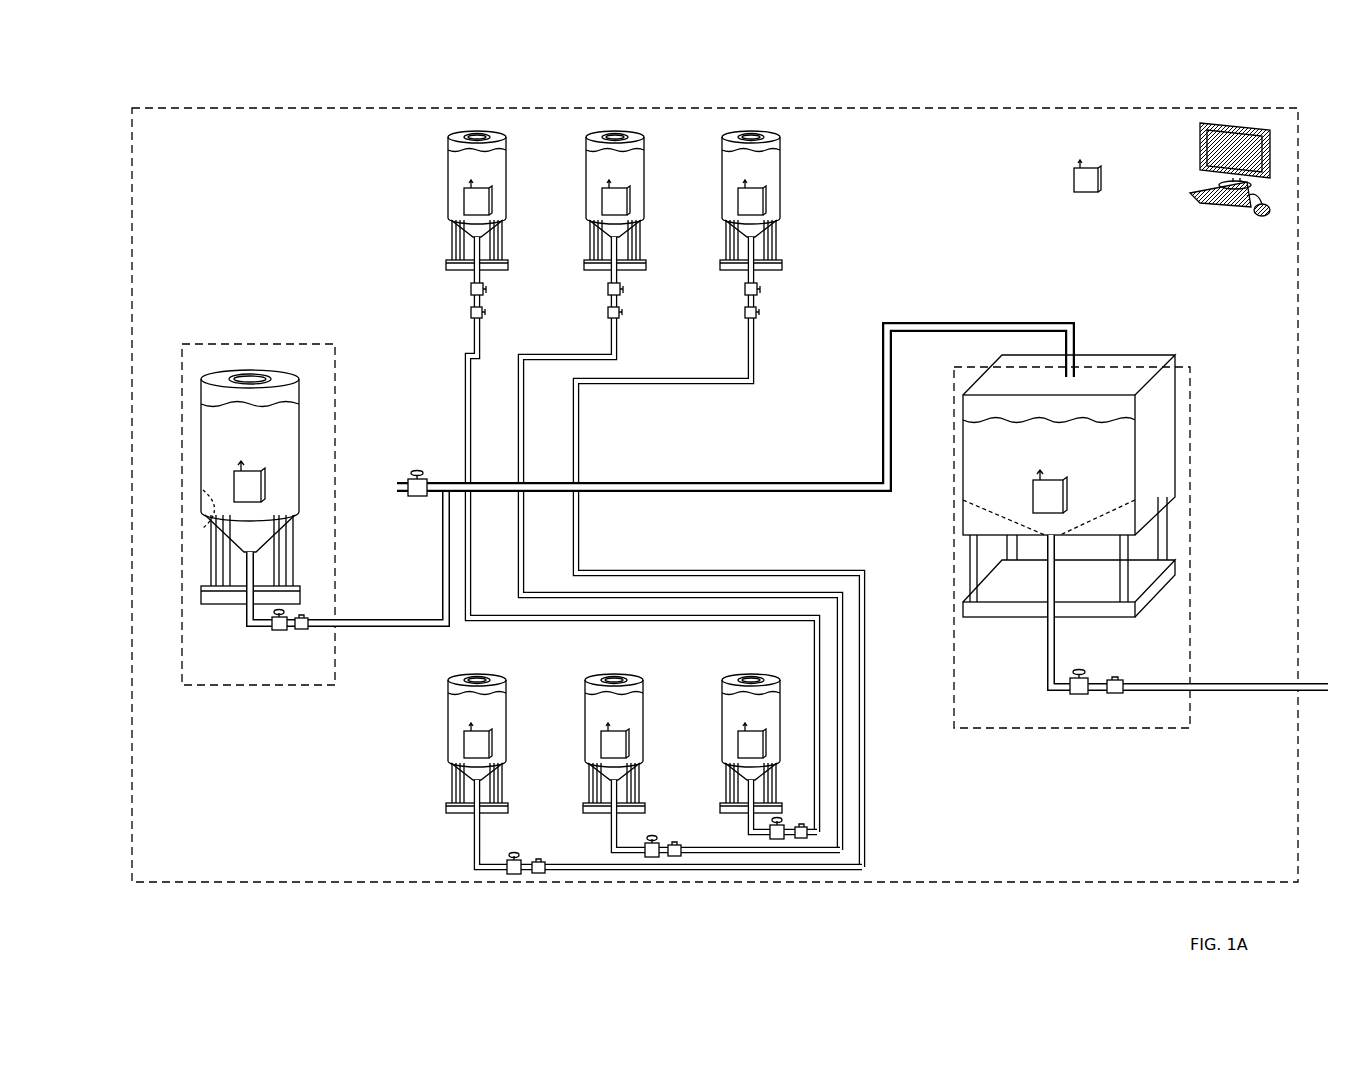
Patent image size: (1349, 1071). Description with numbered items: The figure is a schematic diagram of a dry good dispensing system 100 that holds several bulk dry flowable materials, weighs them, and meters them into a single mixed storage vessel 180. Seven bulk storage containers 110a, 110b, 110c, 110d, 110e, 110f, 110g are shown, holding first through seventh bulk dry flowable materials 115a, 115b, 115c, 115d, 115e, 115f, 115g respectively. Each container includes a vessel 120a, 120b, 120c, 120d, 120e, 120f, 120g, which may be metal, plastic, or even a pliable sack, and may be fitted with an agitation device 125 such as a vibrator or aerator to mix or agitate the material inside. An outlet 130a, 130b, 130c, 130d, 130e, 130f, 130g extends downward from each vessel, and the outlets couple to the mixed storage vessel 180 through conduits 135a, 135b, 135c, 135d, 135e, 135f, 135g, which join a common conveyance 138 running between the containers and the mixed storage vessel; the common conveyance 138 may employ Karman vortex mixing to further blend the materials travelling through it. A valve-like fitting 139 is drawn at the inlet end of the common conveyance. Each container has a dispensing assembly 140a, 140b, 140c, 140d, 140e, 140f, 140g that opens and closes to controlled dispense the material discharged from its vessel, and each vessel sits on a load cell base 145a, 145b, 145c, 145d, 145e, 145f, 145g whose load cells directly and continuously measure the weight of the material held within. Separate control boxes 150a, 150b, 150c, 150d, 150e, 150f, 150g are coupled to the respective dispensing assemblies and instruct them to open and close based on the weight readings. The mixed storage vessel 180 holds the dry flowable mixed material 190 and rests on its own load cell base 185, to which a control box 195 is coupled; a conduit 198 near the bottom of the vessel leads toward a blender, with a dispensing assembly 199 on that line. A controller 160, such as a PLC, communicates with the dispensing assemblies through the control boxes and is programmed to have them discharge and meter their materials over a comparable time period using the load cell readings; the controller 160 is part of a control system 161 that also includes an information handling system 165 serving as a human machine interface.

The dry good dispensing system 100 is at (176, 81).
The first bulk storage container 110a is at (204, 352).
The second bulk storage container 110b is at (421, 125).
The third bulk storage container 110c is at (421, 683).
The fourth bulk storage container 110d is at (561, 125).
The fifth bulk storage container 110e is at (561, 683).
The sixth bulk storage container 110f is at (694, 125).
The seventh bulk storage container 110g is at (694, 683).
The first bulk dry flowable material 115a is at (219, 487).
The second bulk dry flowable material 115b is at (442, 203).
The third bulk dry flowable material 115c is at (442, 747).
The fourth bulk dry flowable material 115d is at (580, 203).
The fifth bulk dry flowable material 115e is at (580, 747).
The sixth bulk dry flowable material 115f is at (718, 203).
The seventh bulk dry flowable material 115g is at (717, 747).
The vessel 120a is at (201, 418).
The vessel 120b is at (444, 177).
The vessel 120c is at (444, 720).
The vessel 120d is at (583, 177).
The vessel 120e is at (581, 720).
The vessel 120f is at (721, 177).
The vessel 120g is at (719, 720).
The agitation device 125 is at (213, 514).
The outlet 130a is at (250, 541).
The outlet 130b is at (442, 233).
The outlet 130c is at (443, 777).
The outlet 130d is at (580, 233).
The outlet 130e is at (580, 777).
The outlet 130f is at (718, 233).
The outlet 130g is at (717, 777).
The conduit 135a is at (246, 610).
The conduit 135b is at (473, 339).
The conduit 135c is at (568, 871).
The conduit 135d is at (610, 339).
The conduit 135e is at (707, 854).
The conduit 135f is at (747, 339).
The conduit 135g is at (822, 814).
The common conveyance 138 is at (618, 494).
The valve 139 is at (418, 498).
The first dispensing assembly 140a is at (280, 632).
The second dispensing assembly 140b is at (471, 289).
The dispensing assembly 140c is at (513, 875).
The dispensing assembly 140d is at (608, 289).
The dispensing assembly 140e is at (651, 858).
The dispensing assembly 140f is at (745, 289).
The dispensing assembly 140g is at (777, 841).
The load cell base 145a is at (201, 592).
The load cell base 145b is at (445, 266).
The load cell base 145c is at (445, 810).
The load cell base 145d is at (583, 266).
The load cell base 145e is at (582, 810).
The load cell base 145f is at (720, 266).
The load cell base 145g is at (720, 810).
The control box 150a is at (248, 486).
The control box 150b is at (434, 197).
The control box 150c is at (434, 740).
The control box 150d is at (572, 197).
The control box 150e is at (572, 740).
The control box 150f is at (710, 197).
The control box 150g is at (709, 740).
The controller 160 is at (1085, 195).
The control system 161 is at (1030, 110).
The information handling system 165 is at (1200, 150).
The mixed storage vessel 180 is at (1186, 527).
The load cell base 185 is at (963, 608).
The dry flowable mixed material 190 is at (1069, 445).
The control box 195 is at (1040, 494).
The conduit 198 is at (1045, 672).
The dispensing assembly 199 is at (1080, 697).